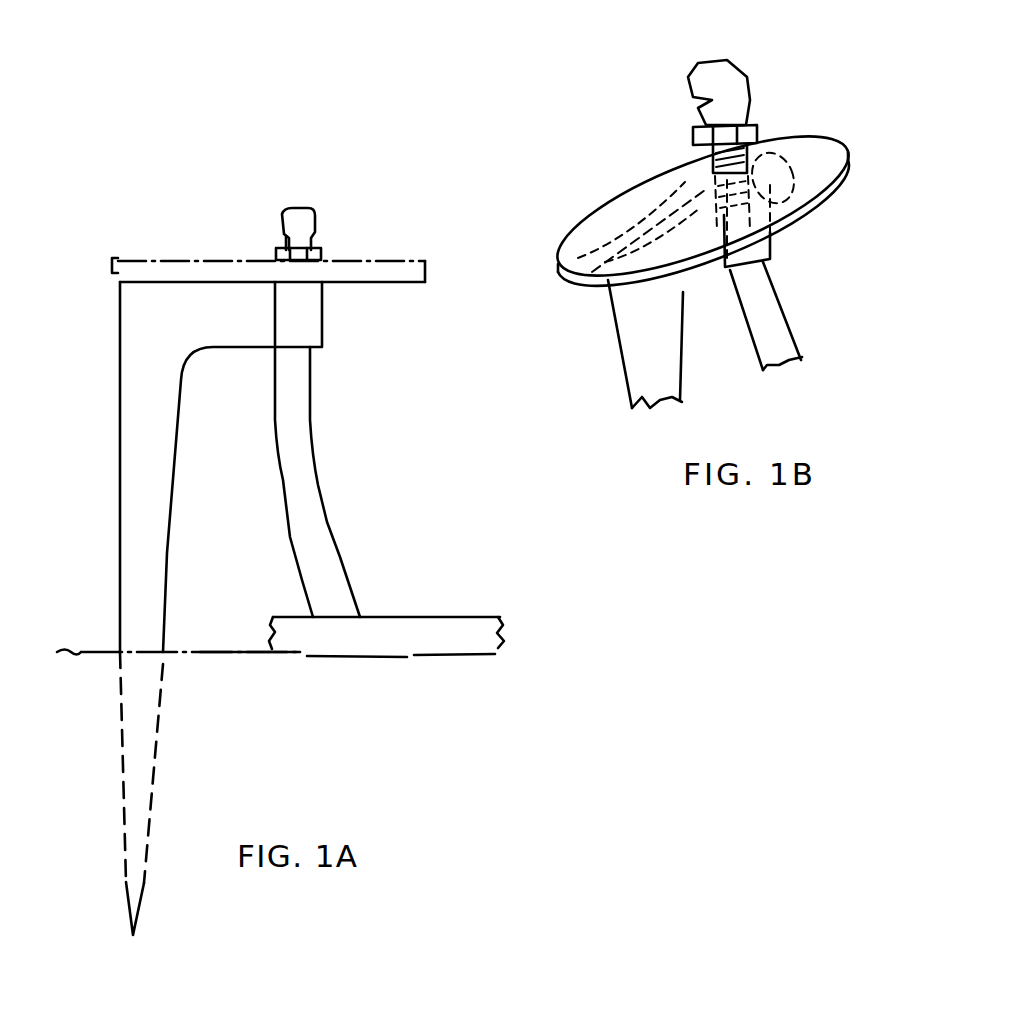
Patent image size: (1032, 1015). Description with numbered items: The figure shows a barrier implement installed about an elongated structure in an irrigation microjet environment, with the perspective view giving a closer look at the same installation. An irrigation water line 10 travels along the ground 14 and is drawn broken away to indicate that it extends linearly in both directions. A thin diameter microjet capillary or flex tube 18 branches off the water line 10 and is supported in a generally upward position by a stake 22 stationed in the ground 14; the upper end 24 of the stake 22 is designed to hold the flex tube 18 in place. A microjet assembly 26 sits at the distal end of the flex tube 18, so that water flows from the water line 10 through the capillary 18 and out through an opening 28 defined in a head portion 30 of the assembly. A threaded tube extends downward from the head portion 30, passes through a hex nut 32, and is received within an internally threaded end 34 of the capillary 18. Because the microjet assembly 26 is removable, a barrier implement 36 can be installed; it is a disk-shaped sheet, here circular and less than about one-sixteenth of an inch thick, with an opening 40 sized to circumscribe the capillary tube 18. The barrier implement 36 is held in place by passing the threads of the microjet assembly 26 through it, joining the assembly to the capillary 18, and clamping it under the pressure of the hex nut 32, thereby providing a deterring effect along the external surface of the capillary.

In FIG. 1A, the irrigation water line 10 is at (438, 625).
In FIG. 1A, the ground 14 is at (275, 727).
In FIG. 1A, the microjet capillary or flex tube 18 is at (301, 440).
In FIG. 1B, the microjet capillary or flex tube 18 is at (763, 292).
In FIG. 1A, the stake 22 is at (127, 382).
In FIG. 1B, the stake 22 is at (645, 344).
In FIG. 1A, the upper end of the stake 24 is at (116, 285).
In FIG. 1B, the upper end of the stake 24 is at (567, 228).
In FIG. 1A, the microjet assembly 26 is at (330, 194).
In FIG. 1A, the opening 28 is at (287, 236).
In FIG. 1B, the opening 28 is at (693, 97).
In FIG. 1A, the head portion 30 is at (312, 221).
In FIG. 1A, the hex nut 32 is at (322, 252).
In FIG. 1B, the hex nut 32 is at (700, 133).
In FIG. 1B, the internally threaded end 34 is at (797, 123).
In FIG. 1A, the barrier implement 36 is at (410, 282).
In FIG. 1B, the barrier implement 36 is at (848, 167).
In FIG. 1B, the opening 40 is at (720, 157).